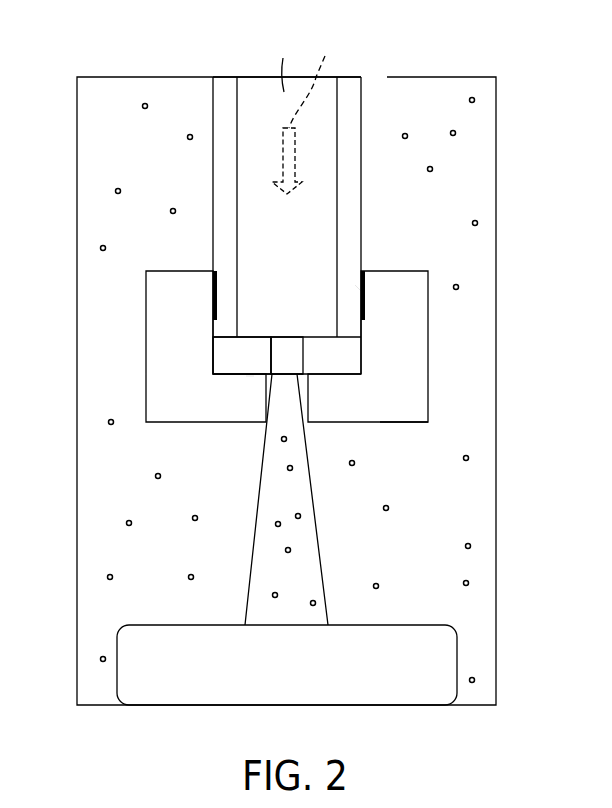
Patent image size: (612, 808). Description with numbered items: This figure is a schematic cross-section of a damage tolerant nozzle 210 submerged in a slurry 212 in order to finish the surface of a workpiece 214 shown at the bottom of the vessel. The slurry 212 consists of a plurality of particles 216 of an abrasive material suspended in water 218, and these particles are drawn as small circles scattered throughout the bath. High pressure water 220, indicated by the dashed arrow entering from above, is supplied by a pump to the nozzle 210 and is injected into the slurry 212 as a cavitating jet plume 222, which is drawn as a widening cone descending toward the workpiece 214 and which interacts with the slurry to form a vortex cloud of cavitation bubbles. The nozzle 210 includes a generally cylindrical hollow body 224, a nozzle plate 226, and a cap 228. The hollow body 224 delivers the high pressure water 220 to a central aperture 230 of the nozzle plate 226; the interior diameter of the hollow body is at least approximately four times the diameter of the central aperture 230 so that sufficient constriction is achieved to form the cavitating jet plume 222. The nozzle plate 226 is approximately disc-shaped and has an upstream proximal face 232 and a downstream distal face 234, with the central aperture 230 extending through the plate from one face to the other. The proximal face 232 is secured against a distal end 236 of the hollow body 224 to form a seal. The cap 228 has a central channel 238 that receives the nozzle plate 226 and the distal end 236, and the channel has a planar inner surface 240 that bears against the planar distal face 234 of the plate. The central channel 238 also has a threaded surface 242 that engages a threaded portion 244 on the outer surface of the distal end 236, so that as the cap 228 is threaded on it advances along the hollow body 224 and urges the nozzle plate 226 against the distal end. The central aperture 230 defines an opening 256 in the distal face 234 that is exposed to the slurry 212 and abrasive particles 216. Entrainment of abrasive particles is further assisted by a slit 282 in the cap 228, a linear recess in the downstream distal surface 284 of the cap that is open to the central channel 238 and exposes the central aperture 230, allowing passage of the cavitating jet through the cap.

The nozzle 210 is at (284, 391).
The slurry 212 is at (108, 112).
The workpiece 214 is at (442, 658).
The particles 216 is at (330, 375).
The water 218 is at (486, 99).
The high pressure water 220 is at (308, 109).
The cavitating jet plume 222 is at (285, 499).
The hollow body 224 is at (324, 225).
The nozzle plate 226 is at (291, 370).
The cap 228 is at (395, 391).
The central aperture 230 is at (290, 358).
The proximal face 232 is at (379, 207).
The distal face 234 is at (246, 390).
The distal end 236 is at (260, 273).
The central channel 238 is at (198, 348).
The inner surface 240 is at (232, 358).
The threaded surface 242 is at (366, 298).
The threaded portion 244 is at (363, 291).
The opening 256 is at (300, 377).
The slit 282 is at (272, 384).
The distal surface 284 is at (398, 435).